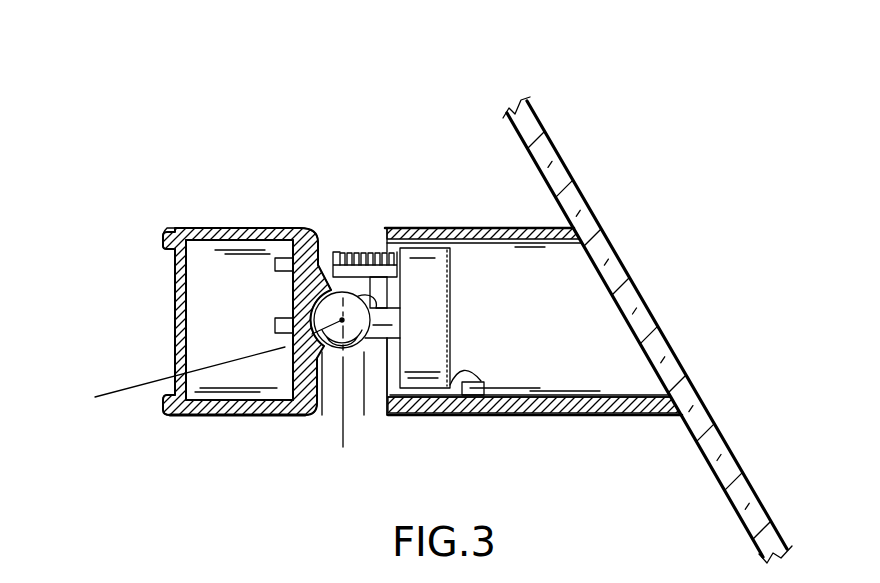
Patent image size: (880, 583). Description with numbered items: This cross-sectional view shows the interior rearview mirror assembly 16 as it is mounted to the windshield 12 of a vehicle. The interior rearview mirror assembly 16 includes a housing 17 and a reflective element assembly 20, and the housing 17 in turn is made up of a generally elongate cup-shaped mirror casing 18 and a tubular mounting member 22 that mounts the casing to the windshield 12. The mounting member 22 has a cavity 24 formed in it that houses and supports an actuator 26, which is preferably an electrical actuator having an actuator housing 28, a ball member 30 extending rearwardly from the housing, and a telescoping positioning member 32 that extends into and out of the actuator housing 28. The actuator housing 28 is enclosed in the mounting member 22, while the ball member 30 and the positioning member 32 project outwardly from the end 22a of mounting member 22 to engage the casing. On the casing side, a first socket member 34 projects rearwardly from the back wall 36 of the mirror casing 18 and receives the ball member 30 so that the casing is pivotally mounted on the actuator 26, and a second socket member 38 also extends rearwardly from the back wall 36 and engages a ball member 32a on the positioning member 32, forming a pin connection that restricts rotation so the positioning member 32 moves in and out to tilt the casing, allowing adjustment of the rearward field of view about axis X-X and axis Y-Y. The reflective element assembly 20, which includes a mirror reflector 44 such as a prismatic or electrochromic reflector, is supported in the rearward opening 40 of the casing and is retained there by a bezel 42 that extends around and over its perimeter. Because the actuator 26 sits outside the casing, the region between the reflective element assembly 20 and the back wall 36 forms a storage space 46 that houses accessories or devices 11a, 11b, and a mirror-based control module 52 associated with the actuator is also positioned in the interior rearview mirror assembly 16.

The windshield 12 is at (541, 182).
The interior rearview mirror assembly 16 is at (277, 104).
The housing 17 is at (388, 178).
The mirror casing 18 is at (212, 228).
The reflective element assembly 20 is at (148, 278).
The mounting member 22 is at (428, 230).
The end of mounting member 22a is at (388, 415).
The cavity 24 is at (542, 416).
The actuator 26 is at (463, 292).
The actuator housing 28 is at (435, 337).
The ball member 30 is at (272, 412).
The telescoping positioning member 32 is at (342, 250).
The ball member 32a is at (318, 288).
The first socket member 34 is at (337, 255).
The back wall 36 is at (302, 290).
The second socket member 38 is at (331, 262).
The rearward opening 40 is at (150, 400).
The bezel 42 is at (170, 410).
The mirror reflector 44 is at (170, 312).
The storage space 46 is at (228, 380).
The mirror-based control module 52 is at (485, 382).
The accessory or device 11a is at (300, 337).
The accessory or device 11b is at (296, 230).
The axis X- X is at (177, 380).
The axis Y- Y is at (348, 415).